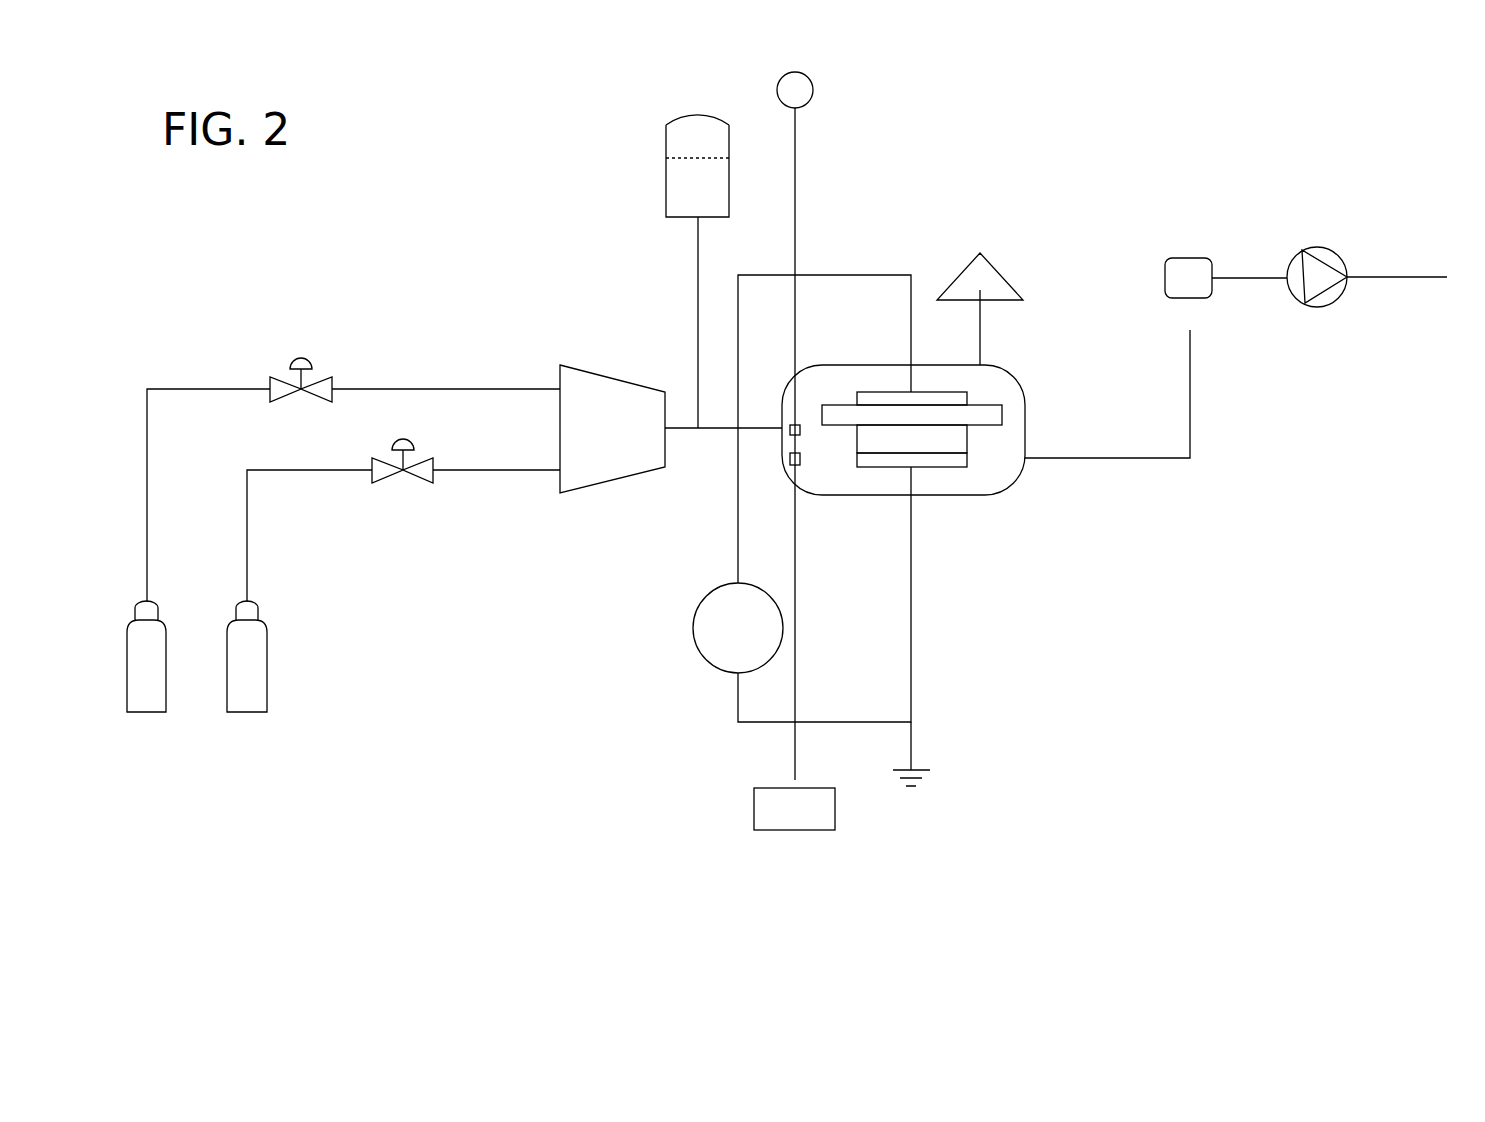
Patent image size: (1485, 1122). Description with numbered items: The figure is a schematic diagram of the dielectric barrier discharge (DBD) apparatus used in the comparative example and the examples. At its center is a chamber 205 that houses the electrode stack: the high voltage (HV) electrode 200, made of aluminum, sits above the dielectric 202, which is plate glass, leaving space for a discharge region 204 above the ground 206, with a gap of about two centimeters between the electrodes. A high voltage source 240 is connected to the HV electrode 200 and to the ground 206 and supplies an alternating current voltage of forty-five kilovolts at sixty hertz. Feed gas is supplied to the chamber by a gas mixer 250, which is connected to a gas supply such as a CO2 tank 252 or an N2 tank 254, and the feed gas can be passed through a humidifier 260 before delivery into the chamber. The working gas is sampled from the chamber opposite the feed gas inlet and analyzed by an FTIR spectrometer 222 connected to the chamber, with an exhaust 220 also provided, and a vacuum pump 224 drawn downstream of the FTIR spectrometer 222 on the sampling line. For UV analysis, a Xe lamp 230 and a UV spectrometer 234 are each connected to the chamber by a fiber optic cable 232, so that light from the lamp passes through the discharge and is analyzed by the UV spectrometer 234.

The high voltage electrode 200 is at (880, 392).
The dielectric 202 is at (838, 410).
The discharge region 204 is at (912, 437).
The chamber 205 is at (993, 495).
The ground 206 is at (887, 468).
The exhaust 220 is at (1003, 278).
The FTIR spectrometer 222 is at (1187, 258).
The vacuum pump 224 is at (1297, 252).
The Xe lamp 230 is at (800, 72).
The fiber optic cable 232 is at (795, 250).
The UV spectrometer 234 is at (757, 830).
The high voltage source 240 is at (693, 640).
The gas mixer 250 is at (560, 385).
The CO2 tank 252 is at (160, 675).
The N2 tank 254 is at (255, 663).
The humidifier 260 is at (663, 140).